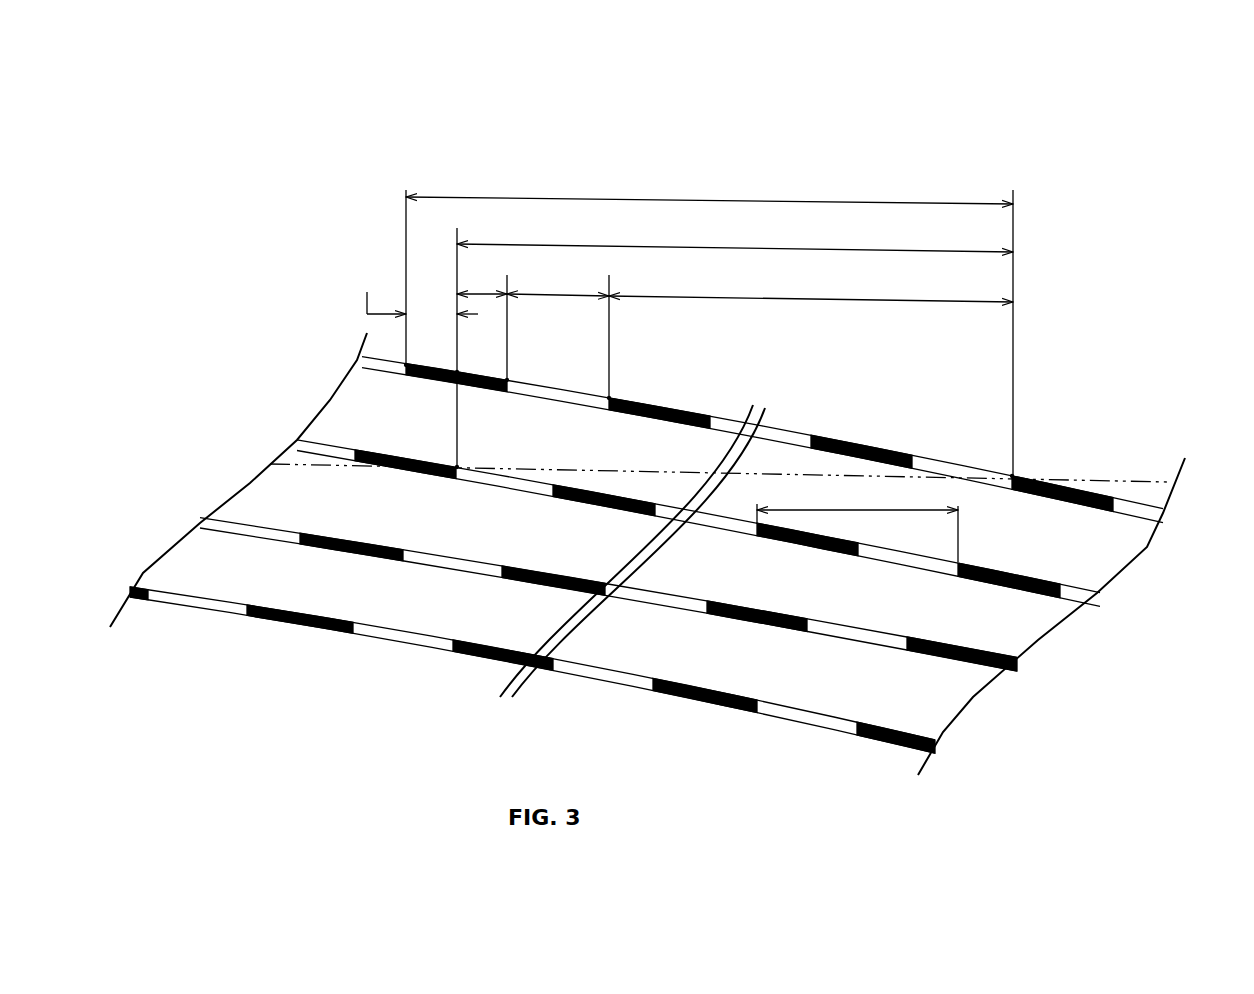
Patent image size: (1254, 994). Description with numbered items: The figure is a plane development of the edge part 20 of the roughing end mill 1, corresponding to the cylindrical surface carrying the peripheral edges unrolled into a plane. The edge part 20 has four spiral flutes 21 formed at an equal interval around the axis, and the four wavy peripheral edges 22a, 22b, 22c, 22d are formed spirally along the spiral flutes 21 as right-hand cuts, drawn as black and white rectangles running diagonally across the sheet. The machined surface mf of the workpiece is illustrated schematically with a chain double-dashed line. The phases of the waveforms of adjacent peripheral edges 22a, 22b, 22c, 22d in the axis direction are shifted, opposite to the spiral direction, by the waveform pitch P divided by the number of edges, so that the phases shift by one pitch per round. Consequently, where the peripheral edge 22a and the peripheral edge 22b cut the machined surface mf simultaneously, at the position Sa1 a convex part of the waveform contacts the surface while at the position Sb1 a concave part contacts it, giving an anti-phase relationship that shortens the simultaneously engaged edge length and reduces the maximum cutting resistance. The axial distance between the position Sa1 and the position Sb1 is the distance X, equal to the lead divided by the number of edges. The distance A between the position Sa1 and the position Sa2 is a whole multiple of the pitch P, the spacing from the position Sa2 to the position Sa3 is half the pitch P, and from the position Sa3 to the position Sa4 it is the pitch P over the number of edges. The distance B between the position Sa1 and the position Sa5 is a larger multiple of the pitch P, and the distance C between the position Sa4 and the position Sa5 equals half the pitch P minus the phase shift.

The roughing end mill 1 is at (1100, 138).
The edge part 20 is at (1110, 290).
The spiral flute 21 is at (247, 492).
The peripheral edge 22a is at (1163, 512).
The peripheral edge 22b is at (1098, 594).
The peripheral edge 22c is at (853, 632).
The peripheral edge 22d is at (803, 713).
The position Sa1 is at (1012, 476).
The position Sa2 is at (608, 398).
The position Sa3 is at (507, 380).
The position Sa4 is at (457, 372).
The position Sa5 is at (400, 368).
The position Sb1 is at (457, 466).
The machined surface mf is at (1110, 476).
The distance B is at (709, 327).
The distance X is at (735, 346).
The distance A is at (473, 284).
The distance C is at (422, 303).
The waveform pitch P is at (857, 525).